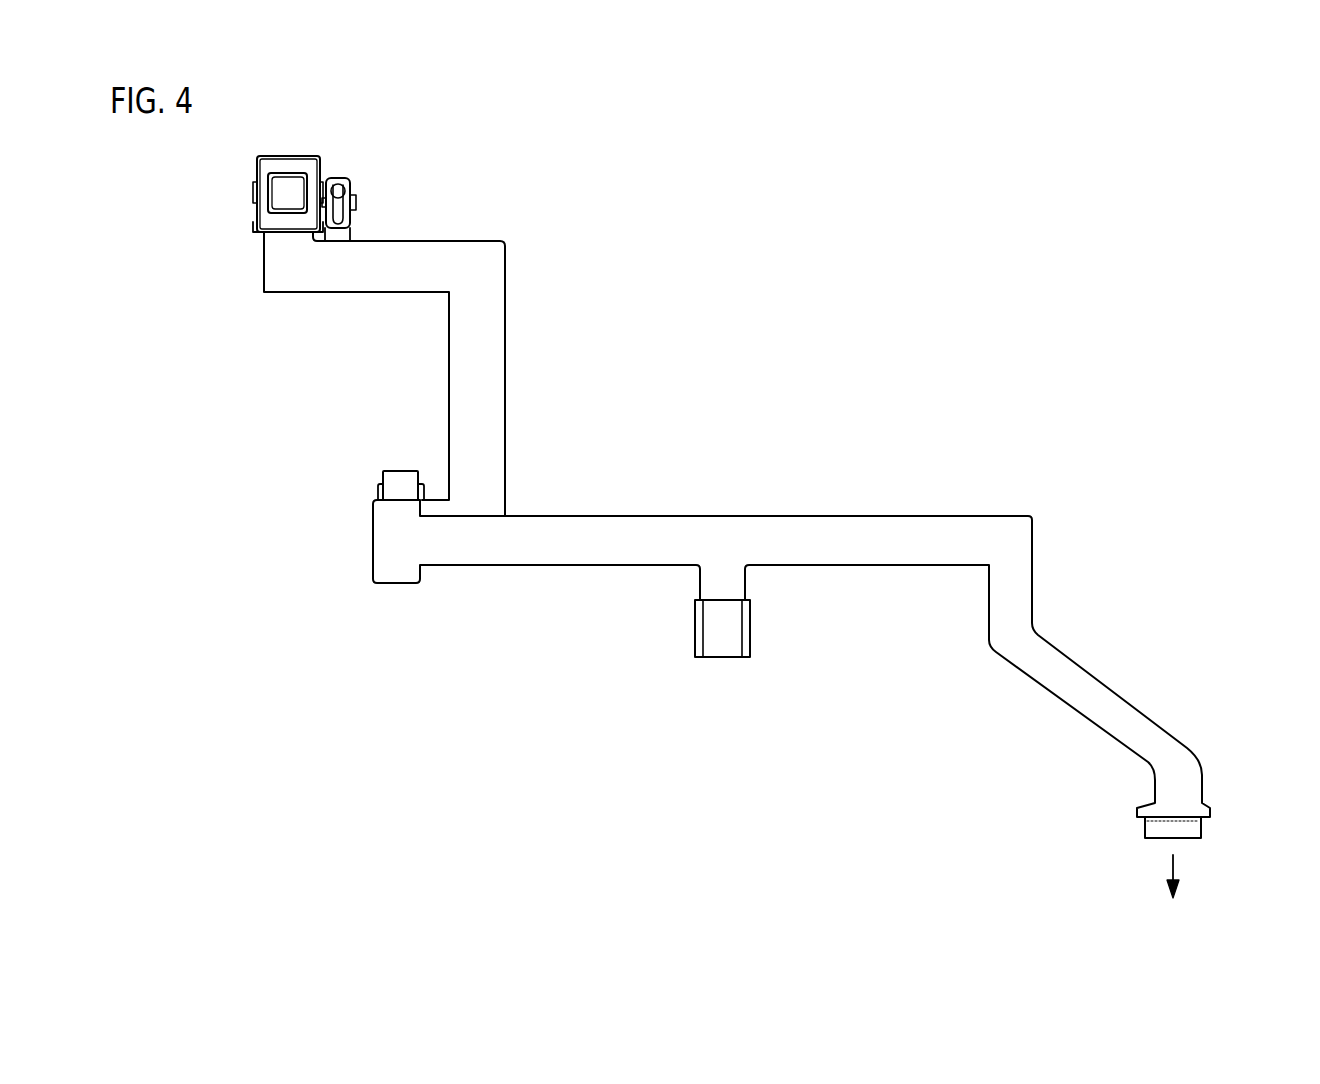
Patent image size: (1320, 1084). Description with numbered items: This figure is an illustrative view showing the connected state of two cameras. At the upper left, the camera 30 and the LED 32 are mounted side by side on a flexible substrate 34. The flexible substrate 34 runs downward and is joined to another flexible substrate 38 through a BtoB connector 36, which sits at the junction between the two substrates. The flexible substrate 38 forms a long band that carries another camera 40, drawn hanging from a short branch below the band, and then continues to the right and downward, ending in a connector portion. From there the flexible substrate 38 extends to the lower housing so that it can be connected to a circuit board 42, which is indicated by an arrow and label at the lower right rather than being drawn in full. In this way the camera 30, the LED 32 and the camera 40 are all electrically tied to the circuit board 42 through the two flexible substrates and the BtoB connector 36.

The camera 30 is at (292, 167).
The LED 32 is at (338, 187).
The flexible substrate 34 is at (322, 275).
The BtoB connector 36 is at (393, 487).
The flexible substrate 38 is at (483, 552).
The camera 40 is at (720, 640).
The circuit board 42 is at (1172, 894).